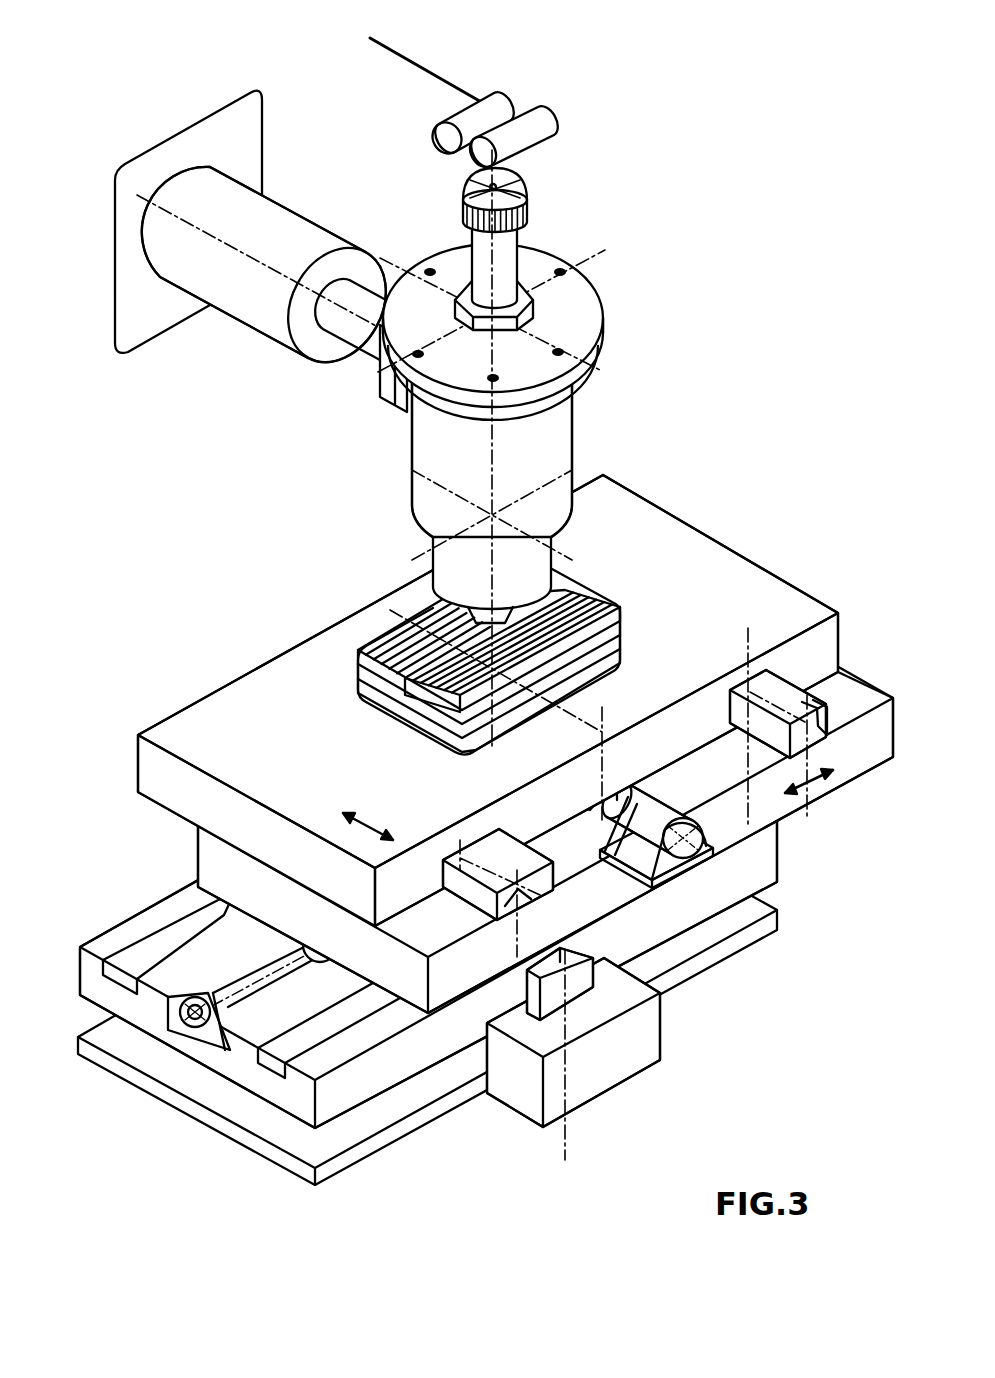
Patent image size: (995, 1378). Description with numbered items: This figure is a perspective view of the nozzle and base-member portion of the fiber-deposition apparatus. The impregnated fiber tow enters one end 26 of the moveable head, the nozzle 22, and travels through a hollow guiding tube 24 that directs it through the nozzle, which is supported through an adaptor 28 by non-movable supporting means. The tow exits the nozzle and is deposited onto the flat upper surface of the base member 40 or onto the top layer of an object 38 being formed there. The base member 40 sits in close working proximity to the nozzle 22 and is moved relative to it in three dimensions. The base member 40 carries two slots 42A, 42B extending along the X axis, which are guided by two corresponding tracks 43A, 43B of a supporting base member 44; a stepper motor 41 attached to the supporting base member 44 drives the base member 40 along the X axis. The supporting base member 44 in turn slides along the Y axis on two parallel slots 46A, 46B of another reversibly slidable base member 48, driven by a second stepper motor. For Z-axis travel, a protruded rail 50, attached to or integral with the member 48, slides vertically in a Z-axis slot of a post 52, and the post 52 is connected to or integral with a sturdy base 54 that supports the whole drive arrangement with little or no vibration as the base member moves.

The nozzle 22 is at (603, 438).
The guiding tube 24 is at (507, 238).
The end of nozzle 26 is at (532, 196).
The adaptor 28 is at (382, 395).
The object 38 is at (600, 595).
The base member 40 is at (305, 667).
The stepper motor 41 is at (693, 852).
The slot 42A is at (735, 698).
The slot 42B is at (470, 890).
The track 43A is at (795, 688).
The track 43B is at (472, 912).
The supporting base member 44 is at (870, 752).
The slot 46A is at (107, 988).
The slot 46B is at (275, 1068).
The reversibly slidable base member 48 is at (300, 1105).
The protruded rail 50 is at (593, 977).
The post 52 is at (613, 1045).
The sturdy base 54 is at (433, 1110).